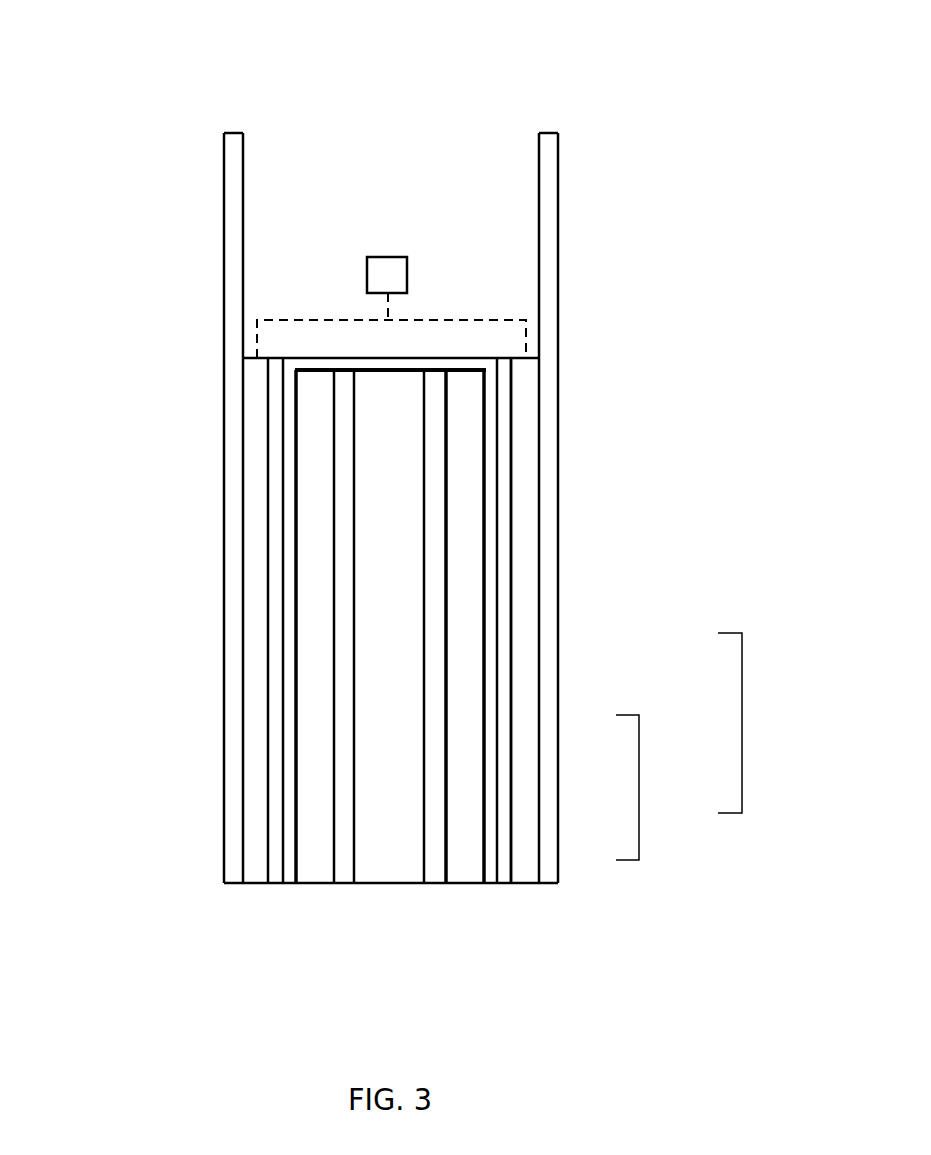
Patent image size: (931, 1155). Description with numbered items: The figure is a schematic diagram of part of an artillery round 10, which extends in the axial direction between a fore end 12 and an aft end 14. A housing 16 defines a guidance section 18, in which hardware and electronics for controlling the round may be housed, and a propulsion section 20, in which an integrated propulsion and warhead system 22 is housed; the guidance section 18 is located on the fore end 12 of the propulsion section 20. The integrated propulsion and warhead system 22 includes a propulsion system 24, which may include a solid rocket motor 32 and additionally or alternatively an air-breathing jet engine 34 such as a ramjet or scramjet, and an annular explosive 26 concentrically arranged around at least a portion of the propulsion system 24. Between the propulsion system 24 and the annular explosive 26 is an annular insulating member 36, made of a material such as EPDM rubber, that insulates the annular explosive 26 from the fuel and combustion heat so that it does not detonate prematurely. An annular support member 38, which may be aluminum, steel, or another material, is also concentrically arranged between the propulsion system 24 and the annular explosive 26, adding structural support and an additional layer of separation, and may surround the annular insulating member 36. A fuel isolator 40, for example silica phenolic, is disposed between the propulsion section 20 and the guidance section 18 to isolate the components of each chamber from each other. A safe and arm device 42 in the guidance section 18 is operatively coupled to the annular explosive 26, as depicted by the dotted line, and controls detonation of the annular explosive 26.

The artillery round 10 is at (633, 193).
The fore end 12 is at (476, 82).
The aft end 14 is at (186, 929).
The housing 16 is at (545, 437).
The guidance section 18 is at (224, 268).
The propulsion section 20 is at (224, 502).
The integrated propulsion and warhead system 22 is at (745, 725).
The propulsion system 24 is at (642, 788).
The annular explosive 26 is at (523, 702).
The solid rocket motor 32 is at (433, 853).
The air-breathing jet engine 34 is at (472, 782).
The annular insulating member 36 is at (493, 528).
The annular support member 38 is at (504, 641).
The fuel isolator 40 is at (443, 363).
The safe and arm device 42 is at (382, 266).